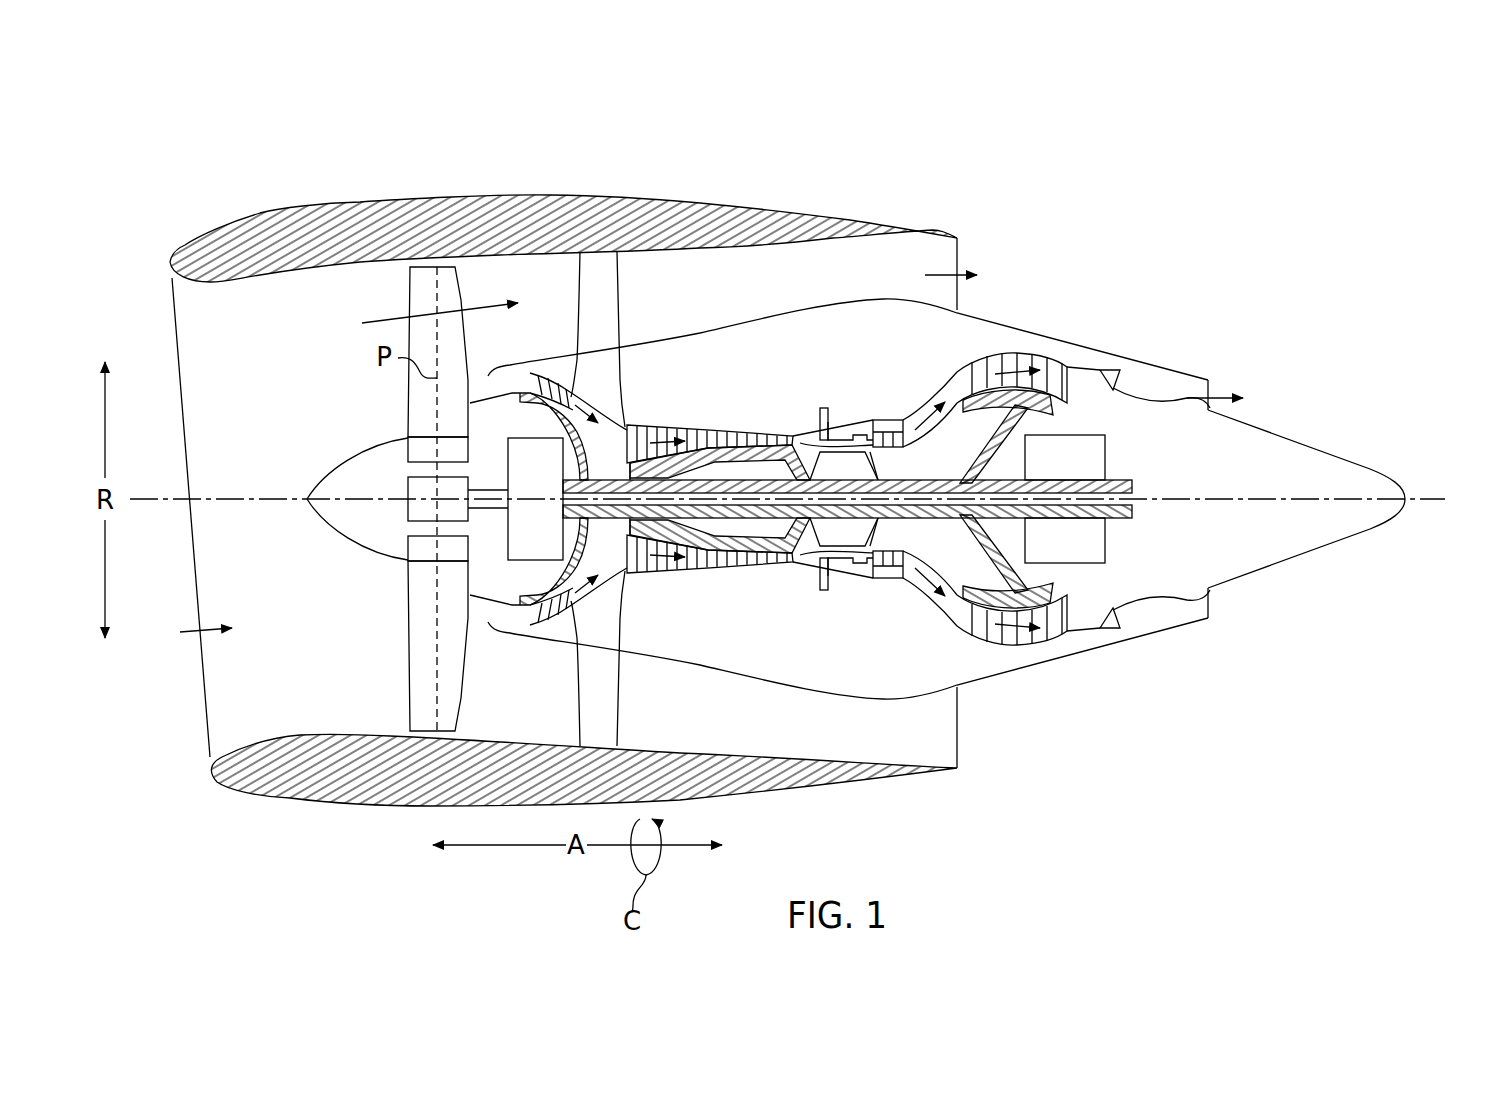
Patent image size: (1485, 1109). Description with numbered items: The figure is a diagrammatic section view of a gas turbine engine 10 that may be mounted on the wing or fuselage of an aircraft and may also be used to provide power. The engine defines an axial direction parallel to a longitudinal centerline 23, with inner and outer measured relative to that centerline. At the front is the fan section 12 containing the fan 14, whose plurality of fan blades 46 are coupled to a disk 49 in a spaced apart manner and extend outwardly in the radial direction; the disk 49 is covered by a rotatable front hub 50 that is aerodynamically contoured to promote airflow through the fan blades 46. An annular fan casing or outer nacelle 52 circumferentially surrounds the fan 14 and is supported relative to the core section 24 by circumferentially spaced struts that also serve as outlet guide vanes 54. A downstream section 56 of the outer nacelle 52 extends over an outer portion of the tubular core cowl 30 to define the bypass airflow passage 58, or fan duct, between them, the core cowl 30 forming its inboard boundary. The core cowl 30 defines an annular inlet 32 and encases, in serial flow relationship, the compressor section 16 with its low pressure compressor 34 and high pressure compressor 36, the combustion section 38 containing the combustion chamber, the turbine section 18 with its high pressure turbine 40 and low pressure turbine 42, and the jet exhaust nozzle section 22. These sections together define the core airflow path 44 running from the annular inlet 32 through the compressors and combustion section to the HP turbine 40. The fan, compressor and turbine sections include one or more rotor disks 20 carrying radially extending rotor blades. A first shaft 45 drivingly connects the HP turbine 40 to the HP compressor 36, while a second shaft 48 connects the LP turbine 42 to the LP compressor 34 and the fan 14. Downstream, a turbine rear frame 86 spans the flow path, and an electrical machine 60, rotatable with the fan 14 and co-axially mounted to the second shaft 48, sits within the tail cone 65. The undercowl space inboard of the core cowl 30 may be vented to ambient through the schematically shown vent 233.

The gas turbine engine 10 is at (1192, 242).
The fan section 12 is at (323, 282).
The fan 14 is at (313, 527).
The compressor section 16 is at (700, 418).
The turbine section 18 is at (1012, 338).
The rotor disk 20 is at (1013, 638).
The nozzle section 22 is at (1113, 620).
The longitudinal centerline 23 is at (1420, 499).
The core section 24 is at (800, 420).
The core cowl 30 is at (746, 668).
The annular inlet 32 is at (527, 618).
The low pressure compressor 34 is at (553, 638).
The high pressure compressor 36 is at (640, 565).
The combustion section 38 is at (838, 566).
The high pressure turbine 40 is at (917, 580).
The low pressure turbine 42 is at (1065, 640).
The core airflow path 44 is at (590, 580).
The first shaft 45 is at (889, 469).
The fan blades 46 is at (407, 666).
The second shaft 48 is at (1108, 478).
The disk 49 is at (408, 447).
The front hub 50 is at (340, 525).
The outer nacelle 52 is at (379, 802).
The outlet guide vanes 54 is at (619, 304).
The downstream section 56 is at (812, 210).
The bypass airflow passage 58 is at (786, 281).
The electrical machine 60 is at (1108, 432).
The tail cone 65 is at (1298, 438).
The turbine rear frame 86 is at (1045, 400).
The vent 233 is at (1213, 603).